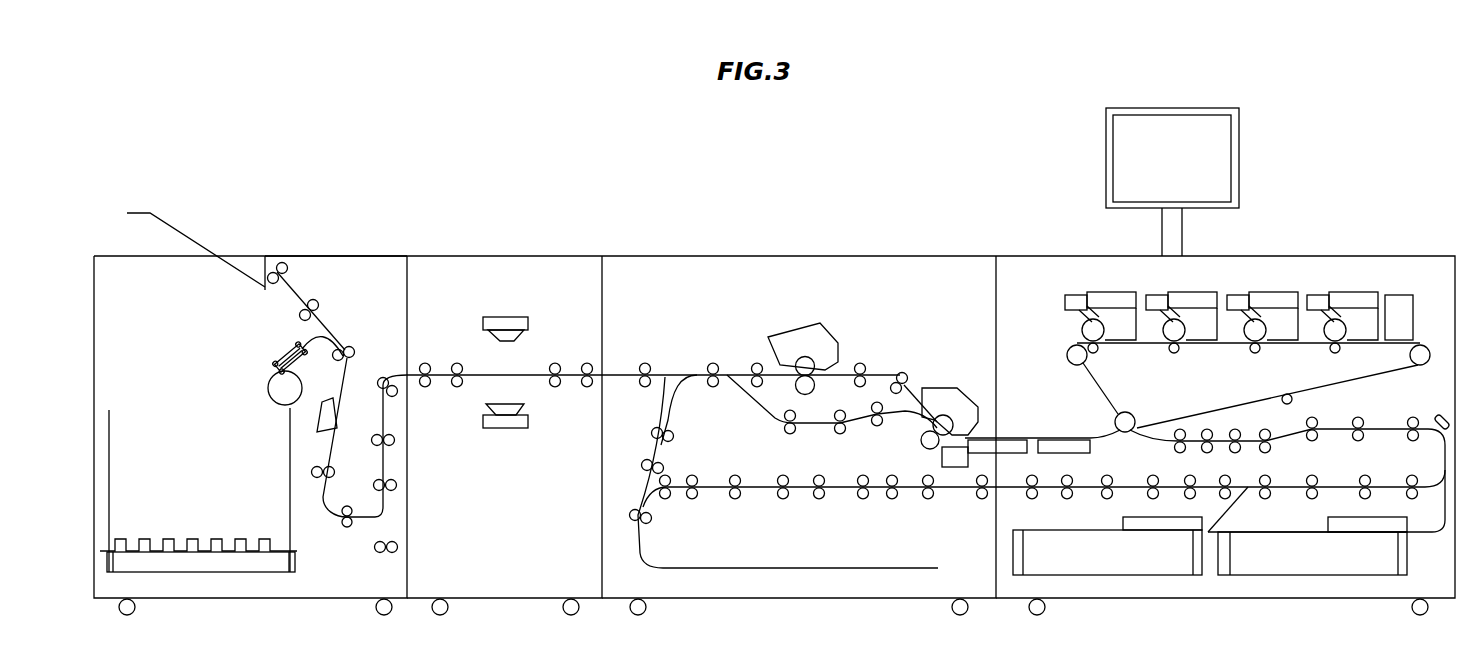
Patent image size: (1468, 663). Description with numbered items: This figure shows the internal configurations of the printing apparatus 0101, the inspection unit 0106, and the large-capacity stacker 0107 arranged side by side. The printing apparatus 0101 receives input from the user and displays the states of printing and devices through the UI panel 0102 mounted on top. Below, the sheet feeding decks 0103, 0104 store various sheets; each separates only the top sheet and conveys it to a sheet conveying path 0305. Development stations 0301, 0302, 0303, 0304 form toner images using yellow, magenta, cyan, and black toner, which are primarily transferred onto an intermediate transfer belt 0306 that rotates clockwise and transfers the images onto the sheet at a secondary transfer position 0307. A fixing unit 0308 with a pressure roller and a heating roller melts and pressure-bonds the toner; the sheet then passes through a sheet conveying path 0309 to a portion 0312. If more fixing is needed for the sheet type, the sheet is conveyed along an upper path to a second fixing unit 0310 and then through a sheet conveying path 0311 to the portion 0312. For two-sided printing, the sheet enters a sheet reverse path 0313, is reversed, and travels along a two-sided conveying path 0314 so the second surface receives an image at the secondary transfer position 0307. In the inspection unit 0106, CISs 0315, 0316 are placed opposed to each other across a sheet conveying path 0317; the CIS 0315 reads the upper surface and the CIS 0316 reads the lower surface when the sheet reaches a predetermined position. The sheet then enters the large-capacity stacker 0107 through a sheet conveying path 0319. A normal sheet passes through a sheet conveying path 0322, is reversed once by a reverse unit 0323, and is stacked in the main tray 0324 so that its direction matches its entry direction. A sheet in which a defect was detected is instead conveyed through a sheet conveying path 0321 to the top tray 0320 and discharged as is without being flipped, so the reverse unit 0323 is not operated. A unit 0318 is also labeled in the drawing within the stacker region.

The printing apparatus 0101 is at (767, 601).
The UI panel 0102 is at (1166, 125).
The sheet feeding deck 0103 is at (1133, 578).
The sheet feeding deck 0104 is at (1315, 578).
The inspection unit 0106 is at (508, 600).
The large-capacity stacker 0107 is at (323, 601).
The development station 0301 is at (1355, 292).
The development station 0302 is at (1275, 292).
The development station 0303 is at (1202, 292).
The development station 0304 is at (1113, 292).
The sheet conveying path 0305 is at (1412, 405).
The intermediate transfer belt 0306 is at (1228, 413).
The secondary transfer position 0307 is at (1125, 411).
The fixing unit 0308 is at (942, 388).
The sheet conveying path 0309 is at (757, 404).
The second fixing unit 0310 is at (796, 328).
The sheet conveying path 0311 is at (737, 373).
The portion 0312 is at (607, 375).
The sheet reverse path 0313 is at (733, 568).
The two-sided conveying path 0314 is at (952, 491).
The CIS 0315 is at (503, 315).
The CIS 0316 is at (503, 430).
The sheet conveying path 0317 is at (476, 374).
The sheet processing unit 0318 is at (372, 256).
The sheet conveying path 0319 is at (323, 497).
The top tray 0320 is at (190, 240).
The sheet conveying path 0321 is at (300, 289).
The sheet conveying path 0322 is at (310, 337).
The reverse unit 0323 is at (365, 582).
The main tray 0324 is at (198, 490).